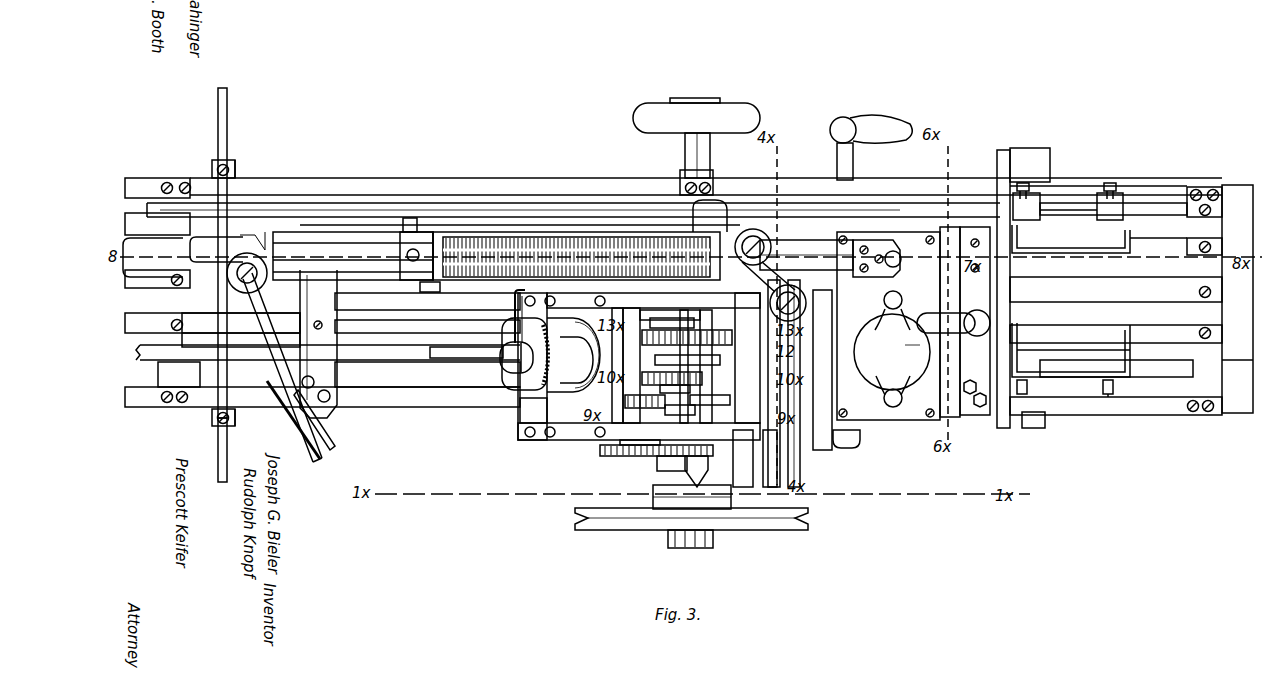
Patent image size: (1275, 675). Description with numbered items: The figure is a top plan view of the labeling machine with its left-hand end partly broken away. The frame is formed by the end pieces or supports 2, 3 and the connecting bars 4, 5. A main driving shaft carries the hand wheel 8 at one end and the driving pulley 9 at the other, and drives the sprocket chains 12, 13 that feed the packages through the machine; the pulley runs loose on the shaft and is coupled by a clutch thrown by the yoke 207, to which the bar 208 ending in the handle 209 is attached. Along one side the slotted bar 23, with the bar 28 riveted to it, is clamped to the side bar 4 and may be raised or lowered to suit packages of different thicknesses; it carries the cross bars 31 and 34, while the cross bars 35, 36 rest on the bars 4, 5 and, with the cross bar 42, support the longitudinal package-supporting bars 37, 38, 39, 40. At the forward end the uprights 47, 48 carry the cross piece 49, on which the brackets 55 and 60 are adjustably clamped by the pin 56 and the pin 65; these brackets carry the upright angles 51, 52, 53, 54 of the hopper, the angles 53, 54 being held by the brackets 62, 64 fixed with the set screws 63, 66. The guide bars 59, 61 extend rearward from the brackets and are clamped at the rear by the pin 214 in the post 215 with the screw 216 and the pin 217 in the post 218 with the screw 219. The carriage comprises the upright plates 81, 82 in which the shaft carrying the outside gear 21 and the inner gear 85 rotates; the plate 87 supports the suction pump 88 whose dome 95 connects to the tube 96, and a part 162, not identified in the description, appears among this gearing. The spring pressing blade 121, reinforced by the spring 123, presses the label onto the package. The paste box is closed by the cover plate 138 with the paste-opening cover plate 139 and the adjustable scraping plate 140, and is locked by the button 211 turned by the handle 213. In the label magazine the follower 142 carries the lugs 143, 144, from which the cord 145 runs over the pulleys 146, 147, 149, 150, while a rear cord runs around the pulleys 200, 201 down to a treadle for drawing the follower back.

The end piece 2 is at (1235, 414).
The end piece 3 is at (270, 420).
The bar 4 is at (148, 408).
The bar 5 is at (290, 178).
The hand wheel 8 is at (752, 113).
The driving pulley 9 is at (800, 528).
The sprocket chain 12 is at (573, 355).
The sprocket chain 13 is at (680, 358).
The gear 21 is at (605, 450).
The bar 23 is at (440, 378).
The bar 28 is at (490, 400).
The cross bar 31 is at (975, 334).
The cross bar 34 is at (326, 325).
The cross bar 35 is at (160, 376).
The cross bar 36 is at (1237, 372).
The bar 37 is at (130, 190).
The bar 38 is at (128, 240).
The bar 39 is at (688, 290).
The bar 40 is at (679, 335).
The cross bar 42 is at (680, 178).
The upright 47 is at (1034, 430).
The upright 48 is at (1030, 150).
The cross piece 49 is at (1000, 178).
The upright angle 51 is at (1071, 240).
The upright angle 52 is at (1071, 348).
The upright angle 53 is at (1125, 247).
The upright angle 54 is at (1125, 330).
The bracket 55 is at (1038, 389).
The pin 56 is at (1090, 389).
The guide bar 59 is at (208, 338).
The bracket 60 is at (1030, 195).
The bar 61 is at (362, 203).
The bracket 62 is at (1130, 380).
The set screw 63 is at (1108, 400).
The bracket 64 is at (1123, 200).
The pin 65 is at (1165, 204).
The set screw 66 is at (1112, 185).
The upright plate 81 is at (575, 438).
The upright plate 82 is at (653, 357).
The gear 85 is at (628, 404).
The plate 87 is at (552, 408).
The suction pump 88 is at (520, 375).
The dome 95 is at (500, 345).
The tube 96 is at (512, 303).
The spring pressing blade 121 is at (222, 252).
The spring 123 is at (248, 252).
The cover plate 138 is at (868, 418).
The cover plate 139 is at (868, 372).
The scraping plate 140 is at (876, 240).
The follower 142 is at (400, 245).
The lug 143 is at (395, 282).
The lug 144 is at (412, 218).
The cord 145 is at (448, 282).
The pulley 146 is at (807, 303).
The pulley 147 is at (818, 480).
The pulley 149 is at (755, 465).
The pulley 150 is at (755, 228).
The gear 162 is at (680, 412).
The pulley 200 is at (264, 271).
The pulley 201 is at (332, 449).
The yoke 207 is at (660, 490).
The bar 208 is at (853, 161).
The handle 209 is at (897, 126).
The button 211 is at (955, 312).
The handle 213 is at (912, 359).
The pin 214 is at (228, 455).
The post 215 is at (236, 420).
The screw 216 is at (215, 427).
The pin 217 is at (228, 112).
The post 218 is at (233, 166).
The screw 219 is at (215, 167).